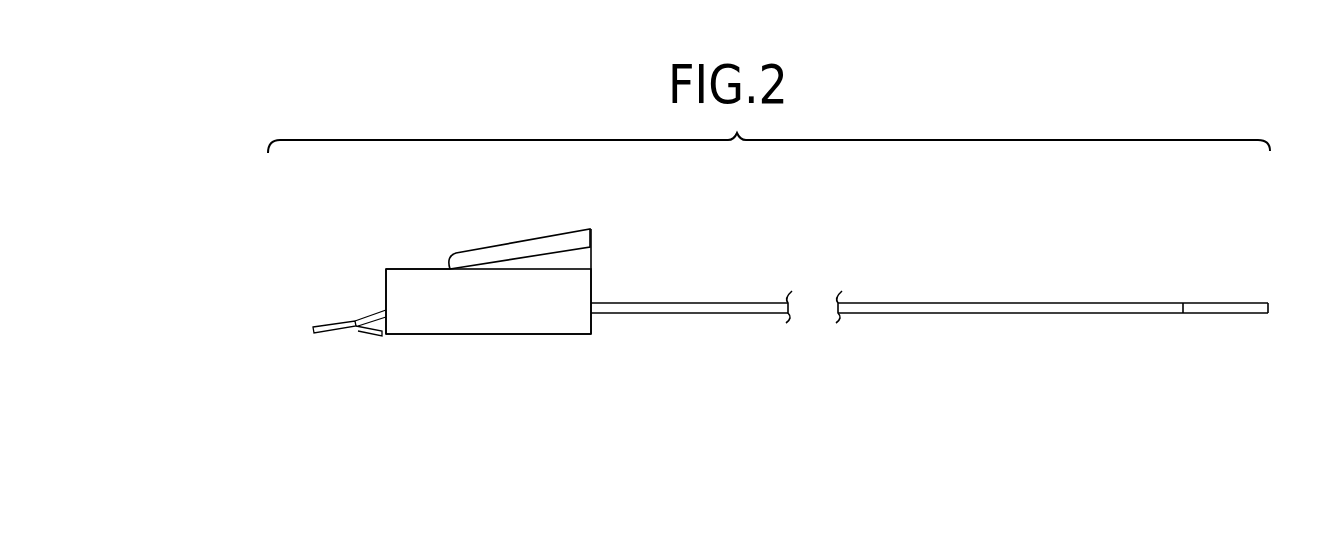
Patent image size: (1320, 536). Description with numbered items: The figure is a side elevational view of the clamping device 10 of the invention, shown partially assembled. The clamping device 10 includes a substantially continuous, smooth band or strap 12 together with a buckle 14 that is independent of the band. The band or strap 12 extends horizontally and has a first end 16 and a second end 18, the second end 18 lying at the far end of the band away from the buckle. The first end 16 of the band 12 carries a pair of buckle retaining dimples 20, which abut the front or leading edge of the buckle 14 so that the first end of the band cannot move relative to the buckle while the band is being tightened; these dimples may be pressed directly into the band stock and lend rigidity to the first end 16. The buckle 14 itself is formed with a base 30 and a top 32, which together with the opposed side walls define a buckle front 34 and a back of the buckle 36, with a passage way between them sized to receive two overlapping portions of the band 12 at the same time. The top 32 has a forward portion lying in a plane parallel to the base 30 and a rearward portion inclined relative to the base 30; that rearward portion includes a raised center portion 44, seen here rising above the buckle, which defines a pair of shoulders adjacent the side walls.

The clamping device 10 is at (672, 262).
The band or strap 12 is at (962, 313).
The buckle 14 is at (537, 306).
The first end 16 is at (312, 330).
The second end 18 is at (1235, 313).
The buckle retaining dimples 20 is at (368, 333).
The base 30 is at (498, 334).
The top 32 is at (402, 268).
The buckle front 34 is at (386, 286).
The back of the buckle 36 is at (591, 254).
The raised center portion 44 is at (497, 245).